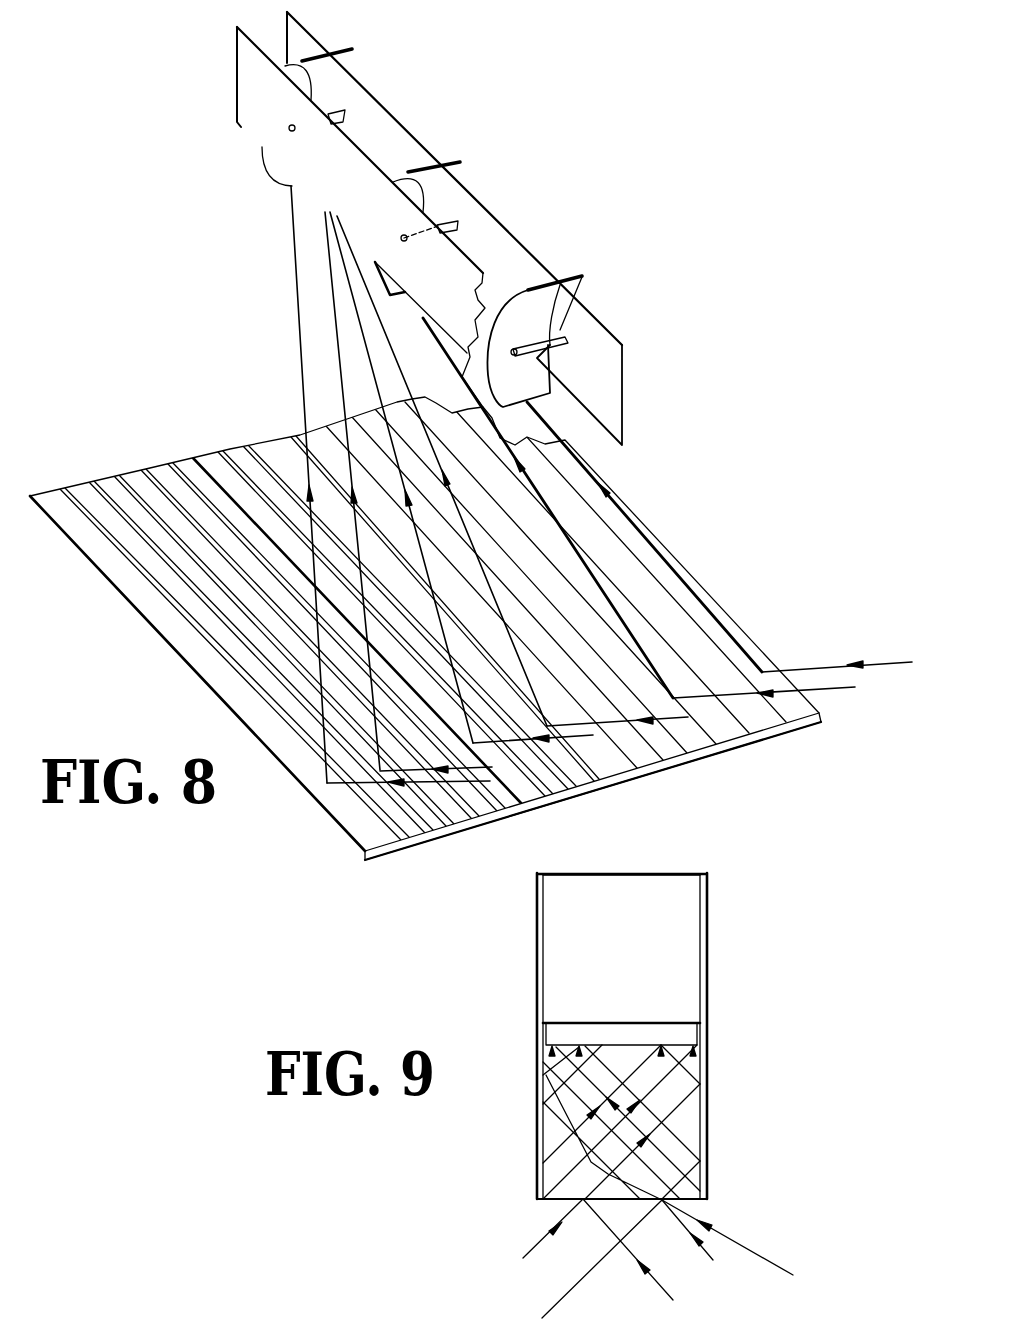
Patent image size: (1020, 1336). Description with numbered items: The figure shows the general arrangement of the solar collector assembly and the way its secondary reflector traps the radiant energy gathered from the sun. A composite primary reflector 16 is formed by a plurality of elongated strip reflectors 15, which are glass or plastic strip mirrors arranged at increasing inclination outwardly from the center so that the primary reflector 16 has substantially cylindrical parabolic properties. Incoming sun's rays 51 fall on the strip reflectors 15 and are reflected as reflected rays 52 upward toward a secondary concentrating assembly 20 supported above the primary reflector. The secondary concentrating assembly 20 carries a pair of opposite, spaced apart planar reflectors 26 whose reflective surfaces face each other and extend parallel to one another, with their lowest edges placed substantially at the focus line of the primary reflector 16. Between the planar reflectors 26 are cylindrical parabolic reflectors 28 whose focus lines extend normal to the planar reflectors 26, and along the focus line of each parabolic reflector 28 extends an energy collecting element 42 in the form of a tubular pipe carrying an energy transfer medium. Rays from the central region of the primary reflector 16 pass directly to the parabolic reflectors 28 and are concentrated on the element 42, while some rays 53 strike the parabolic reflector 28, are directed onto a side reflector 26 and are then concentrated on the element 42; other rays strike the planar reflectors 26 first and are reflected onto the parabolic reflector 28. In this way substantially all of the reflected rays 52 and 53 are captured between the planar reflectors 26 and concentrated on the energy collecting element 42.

In FIG. 8, the strip reflectors 15 is at (793, 707).
In FIG. 8, the composite primary reflector 16 is at (645, 488).
In FIG. 8, the secondary concentrating assembly 20 is at (502, 148).
In FIG. 8, the planar reflectors 26 is at (308, 167).
In FIG. 9, the planar reflectors 26 is at (535, 967).
In FIG. 8, the cylindrical parabolic reflectors 28 is at (450, 163).
In FIG. 9, the cylindrical parabolic reflectors 28 is at (642, 878).
In FIG. 8, the energy collecting element 42 is at (567, 287).
In FIG. 9, the energy collecting element 42 is at (670, 1023).
In FIG. 8, the incoming sun's rays 51 is at (500, 775).
In FIG. 8, the reflected rays 52 is at (467, 697).
In FIG. 9, the reflected rays 52 is at (655, 1276).
In FIG. 9, the rays striking the parabolic reflector 53 is at (723, 1233).